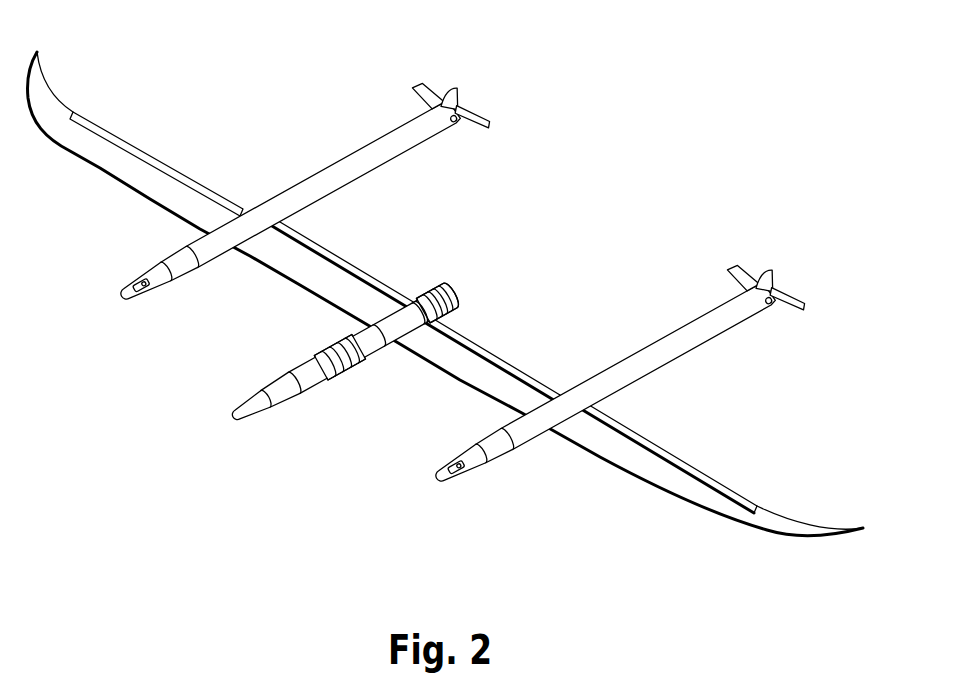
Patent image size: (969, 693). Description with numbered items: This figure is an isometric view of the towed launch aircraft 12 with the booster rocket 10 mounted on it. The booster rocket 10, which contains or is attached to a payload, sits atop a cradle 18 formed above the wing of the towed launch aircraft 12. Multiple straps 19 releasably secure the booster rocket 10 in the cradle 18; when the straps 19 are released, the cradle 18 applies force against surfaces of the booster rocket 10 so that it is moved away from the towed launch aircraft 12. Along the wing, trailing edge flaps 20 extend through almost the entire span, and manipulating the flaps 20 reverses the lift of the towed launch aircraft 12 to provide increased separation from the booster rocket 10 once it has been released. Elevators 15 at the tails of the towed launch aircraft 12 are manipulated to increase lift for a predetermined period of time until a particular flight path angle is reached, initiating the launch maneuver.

The booster rocket 10 is at (402, 292).
The towed launch aircraft 12 is at (178, 283).
The elevators 15 is at (427, 86).
The cradle 18 is at (448, 311).
The straps 19 is at (450, 290).
The trailing edge flaps 20 is at (171, 159).